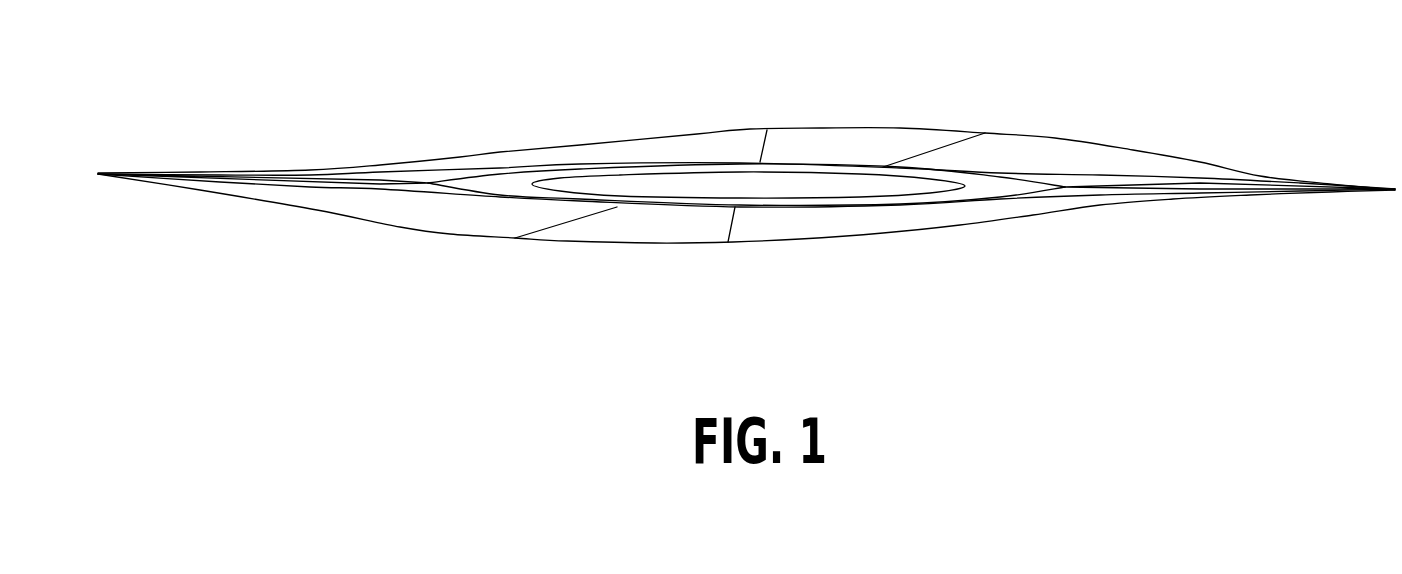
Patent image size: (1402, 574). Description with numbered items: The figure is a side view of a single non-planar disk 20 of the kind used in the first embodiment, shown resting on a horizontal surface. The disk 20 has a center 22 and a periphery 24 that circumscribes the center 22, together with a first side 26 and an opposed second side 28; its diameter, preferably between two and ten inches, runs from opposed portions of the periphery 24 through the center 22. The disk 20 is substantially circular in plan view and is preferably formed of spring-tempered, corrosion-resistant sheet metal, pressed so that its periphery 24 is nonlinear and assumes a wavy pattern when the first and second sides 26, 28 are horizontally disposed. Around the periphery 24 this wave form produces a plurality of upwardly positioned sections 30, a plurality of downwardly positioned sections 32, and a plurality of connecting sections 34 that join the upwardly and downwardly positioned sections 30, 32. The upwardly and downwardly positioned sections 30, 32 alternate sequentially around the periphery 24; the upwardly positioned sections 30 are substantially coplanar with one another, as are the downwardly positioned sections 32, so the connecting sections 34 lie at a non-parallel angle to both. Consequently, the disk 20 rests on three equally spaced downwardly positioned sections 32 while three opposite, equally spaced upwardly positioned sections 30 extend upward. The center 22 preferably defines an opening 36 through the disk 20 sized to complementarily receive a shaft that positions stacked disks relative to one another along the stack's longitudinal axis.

The disk 20 is at (1137, 163).
The center 22 is at (843, 182).
The periphery 24 is at (1055, 137).
The first side 26 is at (695, 145).
The second side 28 is at (887, 233).
The upwardly positioned sections 30 is at (797, 145).
The downwardly positioned sections 32 is at (655, 242).
The connecting sections 34 is at (413, 230).
The opening 36 is at (625, 187).